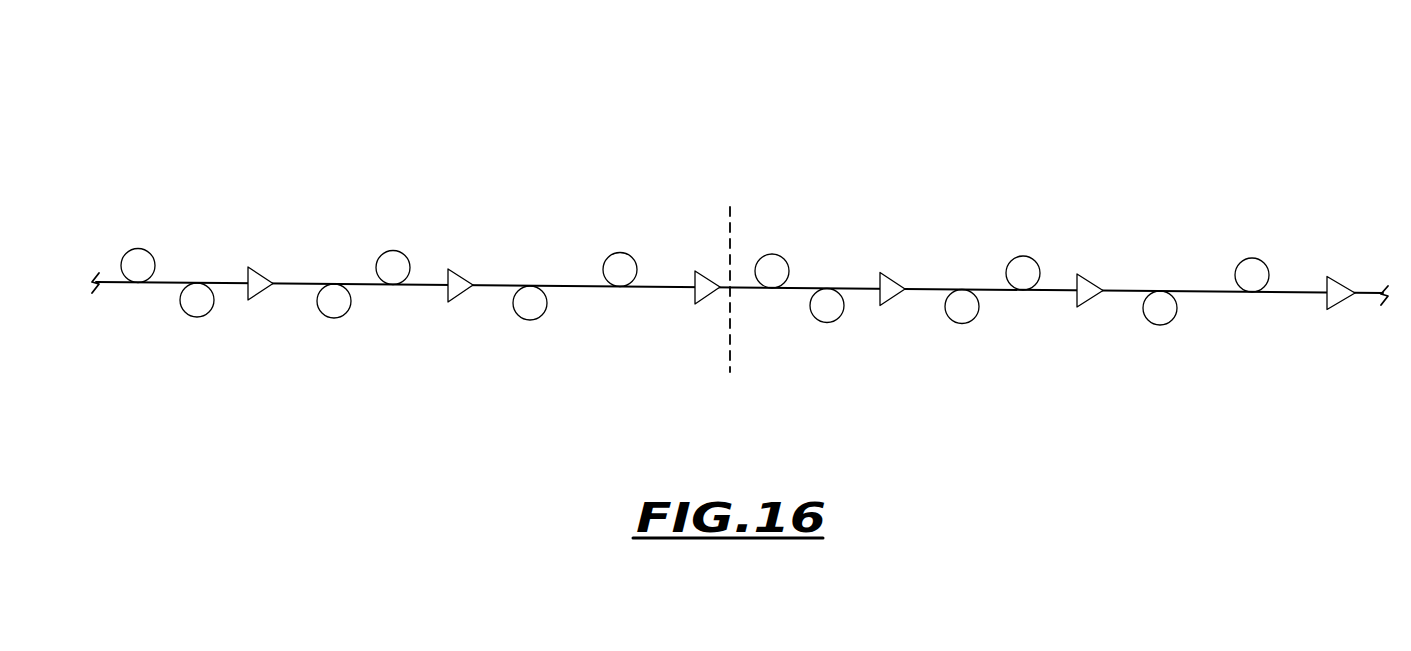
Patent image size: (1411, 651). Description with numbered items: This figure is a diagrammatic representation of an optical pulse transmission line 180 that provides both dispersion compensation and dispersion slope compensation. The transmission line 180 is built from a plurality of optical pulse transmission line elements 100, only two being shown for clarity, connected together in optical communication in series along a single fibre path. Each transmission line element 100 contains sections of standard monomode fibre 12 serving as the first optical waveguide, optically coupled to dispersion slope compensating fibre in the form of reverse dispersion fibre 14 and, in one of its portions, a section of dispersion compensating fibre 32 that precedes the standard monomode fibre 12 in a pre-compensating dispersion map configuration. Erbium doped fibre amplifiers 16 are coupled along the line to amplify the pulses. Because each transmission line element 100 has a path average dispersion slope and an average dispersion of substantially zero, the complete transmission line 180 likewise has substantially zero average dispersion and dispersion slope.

The optical pulse transmission line 180 is at (756, 108).
The optical pulse transmission line element 100 is at (418, 206).
The standard monomode fibre 12 is at (143, 263).
The reverse dispersion fibre 14 is at (202, 307).
The erbium doped fibre amplifier 16 is at (263, 280).
The dispersion compensating fibre 32 is at (532, 312).